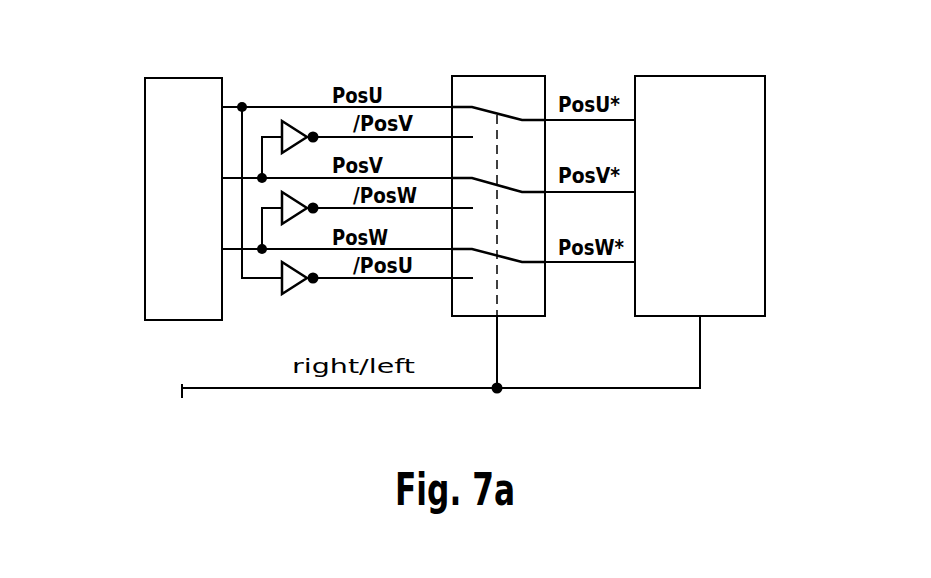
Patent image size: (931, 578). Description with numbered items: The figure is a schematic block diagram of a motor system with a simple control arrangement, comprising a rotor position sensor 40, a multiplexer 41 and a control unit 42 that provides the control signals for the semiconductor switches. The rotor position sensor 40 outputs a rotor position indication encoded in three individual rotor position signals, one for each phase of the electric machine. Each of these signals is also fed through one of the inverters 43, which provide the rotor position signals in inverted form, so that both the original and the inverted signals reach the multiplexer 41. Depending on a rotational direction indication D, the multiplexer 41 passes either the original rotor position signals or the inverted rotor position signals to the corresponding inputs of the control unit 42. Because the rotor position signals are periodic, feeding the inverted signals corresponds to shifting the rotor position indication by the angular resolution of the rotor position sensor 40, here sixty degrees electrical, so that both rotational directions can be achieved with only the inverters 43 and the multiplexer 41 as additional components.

The rotor position sensor 40 is at (160, 214).
The multiplexer 41 is at (511, 183).
The control unit 42 is at (697, 88).
The inverters 43 is at (293, 137).
The rotational direction indication D is at (500, 328).